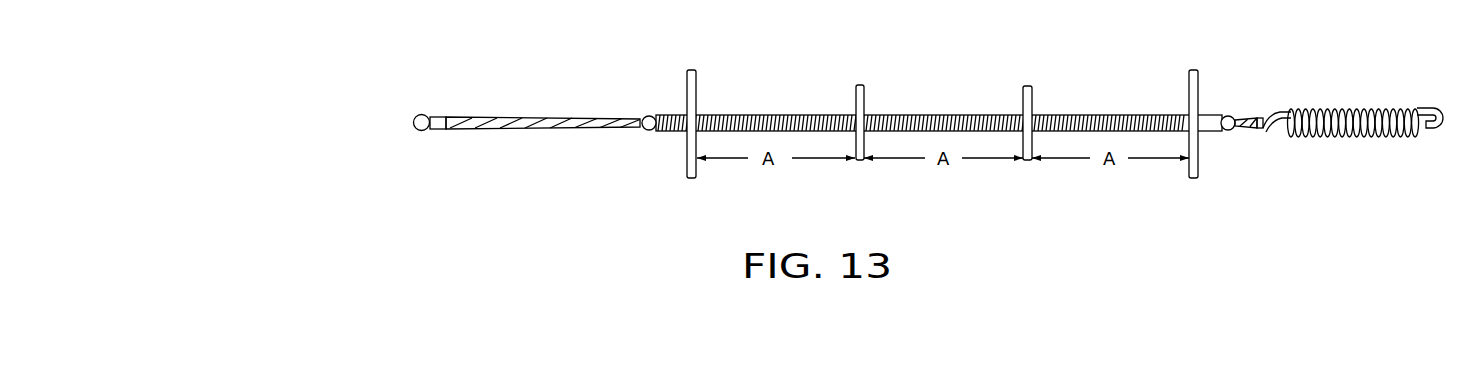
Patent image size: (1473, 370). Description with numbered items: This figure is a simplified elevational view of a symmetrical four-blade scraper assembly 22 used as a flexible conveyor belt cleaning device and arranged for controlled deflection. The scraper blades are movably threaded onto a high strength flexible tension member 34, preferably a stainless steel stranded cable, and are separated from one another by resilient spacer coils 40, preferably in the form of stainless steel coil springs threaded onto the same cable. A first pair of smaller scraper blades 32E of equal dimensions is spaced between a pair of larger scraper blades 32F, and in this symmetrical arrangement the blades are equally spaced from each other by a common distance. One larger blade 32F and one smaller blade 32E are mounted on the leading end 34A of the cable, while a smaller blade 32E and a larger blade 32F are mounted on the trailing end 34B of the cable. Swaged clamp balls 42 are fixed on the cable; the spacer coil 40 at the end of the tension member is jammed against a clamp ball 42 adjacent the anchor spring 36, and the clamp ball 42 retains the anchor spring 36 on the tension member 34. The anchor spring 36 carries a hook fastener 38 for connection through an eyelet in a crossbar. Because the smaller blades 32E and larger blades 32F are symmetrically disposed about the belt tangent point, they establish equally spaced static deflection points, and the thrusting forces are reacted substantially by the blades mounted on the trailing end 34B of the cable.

The scraper assembly 22 is at (906, 51).
The smaller scraper blade 32E is at (864, 89).
The larger scraper blade 32F is at (697, 76).
The flexible tension member 34 is at (580, 137).
The leading end of the cable 34A is at (541, 117).
The trailing end of the cable 34B is at (1250, 116).
The anchor spring 36 is at (1336, 143).
The hook fastener 38 is at (1436, 128).
The spacer coil 40 is at (668, 114).
The clamp ball 42 is at (425, 130).